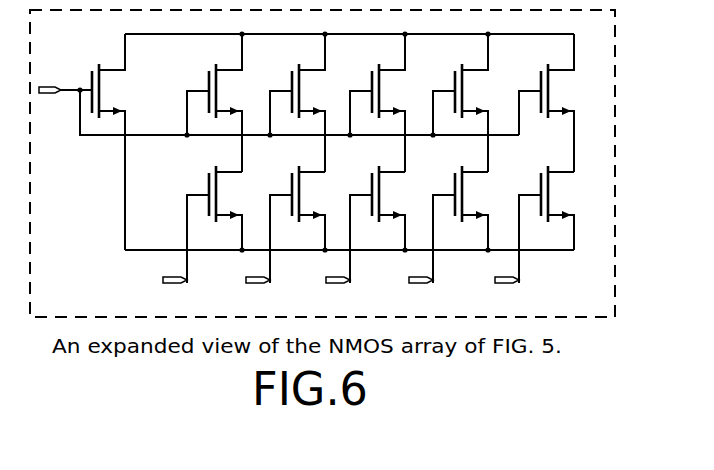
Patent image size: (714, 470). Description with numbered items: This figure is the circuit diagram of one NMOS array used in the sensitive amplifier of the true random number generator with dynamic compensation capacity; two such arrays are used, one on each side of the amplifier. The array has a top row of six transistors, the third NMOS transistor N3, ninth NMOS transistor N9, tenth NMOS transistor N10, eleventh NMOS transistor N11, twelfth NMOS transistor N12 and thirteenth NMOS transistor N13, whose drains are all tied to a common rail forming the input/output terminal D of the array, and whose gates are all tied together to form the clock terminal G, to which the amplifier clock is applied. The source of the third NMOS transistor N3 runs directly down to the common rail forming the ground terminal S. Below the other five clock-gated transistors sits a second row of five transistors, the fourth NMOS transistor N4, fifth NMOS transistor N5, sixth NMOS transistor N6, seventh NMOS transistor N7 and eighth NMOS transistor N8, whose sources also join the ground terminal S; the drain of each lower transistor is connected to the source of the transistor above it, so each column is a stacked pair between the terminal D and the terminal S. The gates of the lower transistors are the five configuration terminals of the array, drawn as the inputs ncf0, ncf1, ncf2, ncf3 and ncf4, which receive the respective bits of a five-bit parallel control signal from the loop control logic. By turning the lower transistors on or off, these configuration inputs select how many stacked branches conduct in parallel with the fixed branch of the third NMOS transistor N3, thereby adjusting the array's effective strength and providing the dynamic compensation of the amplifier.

The third NMOS transistor N3 is at (114, 142).
The fourth NMOS transistor N4 is at (231, 208).
The fifth NMOS transistor N5 is at (314, 208).
The sixth NMOS transistor N6 is at (398, 208).
The seventh NMOS transistor N7 is at (481, 208).
The eighth NMOS transistor N8 is at (569, 208).
The ninth NMOS transistor N9 is at (220, 103).
The tenth NMOS transistor N10 is at (309, 103).
The eleventh NMOS transistor N11 is at (390, 103).
The twelfth NMOS transistor N12 is at (473, 103).
The thirteenth NMOS transistor N13 is at (558, 103).
The drain terminal rail D is at (339, 36).
The gate terminal G is at (279, 101).
The source terminal rail S is at (339, 251).
The control input ncf0 is at (173, 254).
The control input ncf1 is at (259, 254).
The control input ncf2 is at (338, 254).
The control input ncf3 is at (422, 254).
The control input ncf4 is at (508, 254).